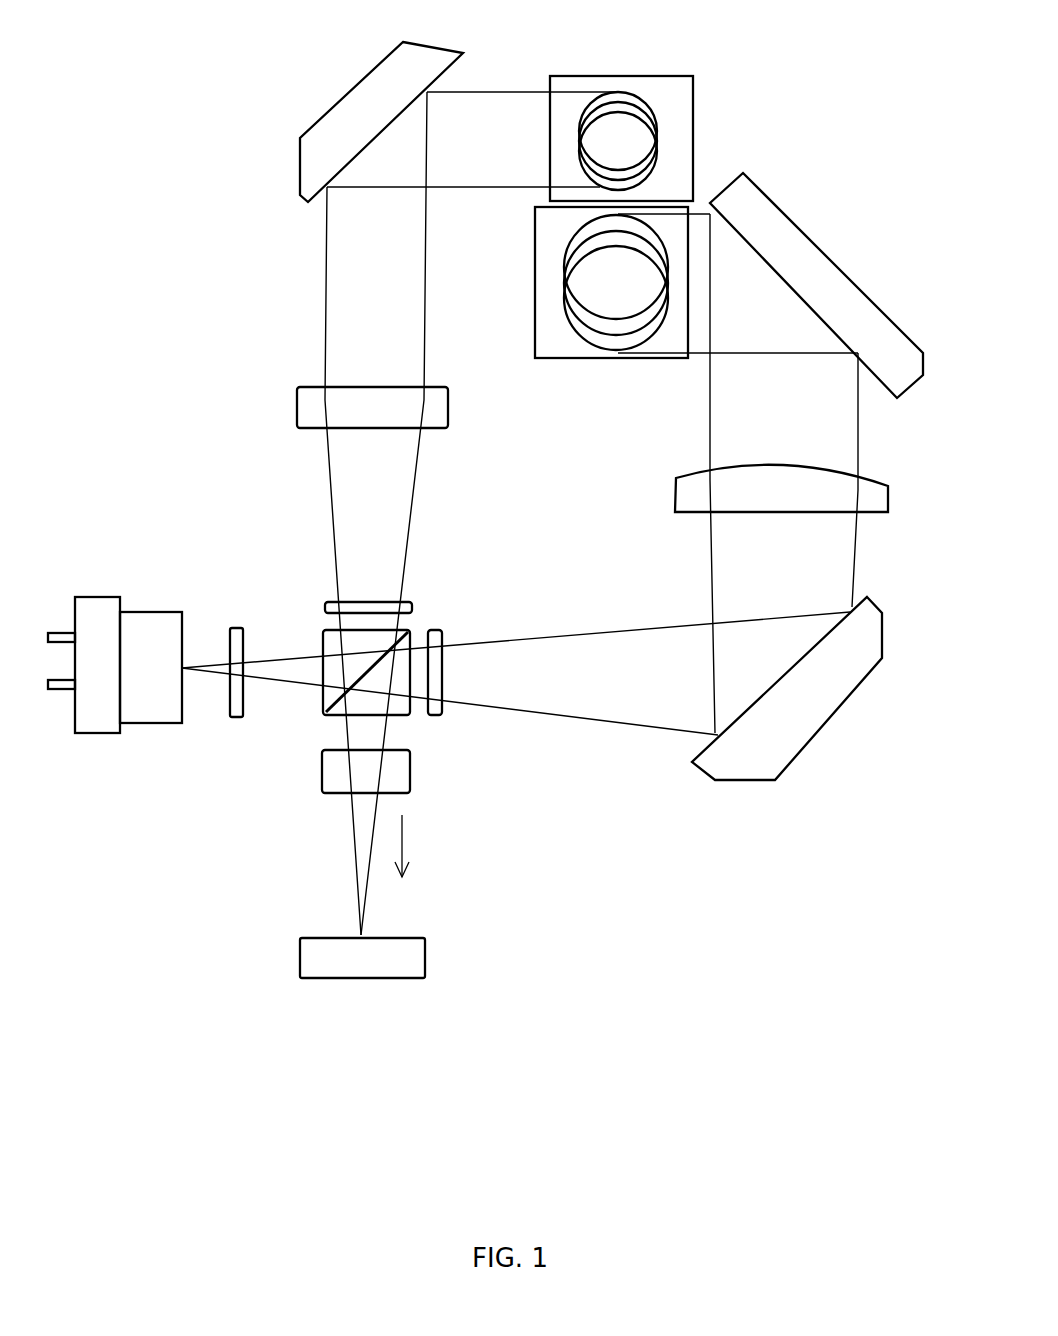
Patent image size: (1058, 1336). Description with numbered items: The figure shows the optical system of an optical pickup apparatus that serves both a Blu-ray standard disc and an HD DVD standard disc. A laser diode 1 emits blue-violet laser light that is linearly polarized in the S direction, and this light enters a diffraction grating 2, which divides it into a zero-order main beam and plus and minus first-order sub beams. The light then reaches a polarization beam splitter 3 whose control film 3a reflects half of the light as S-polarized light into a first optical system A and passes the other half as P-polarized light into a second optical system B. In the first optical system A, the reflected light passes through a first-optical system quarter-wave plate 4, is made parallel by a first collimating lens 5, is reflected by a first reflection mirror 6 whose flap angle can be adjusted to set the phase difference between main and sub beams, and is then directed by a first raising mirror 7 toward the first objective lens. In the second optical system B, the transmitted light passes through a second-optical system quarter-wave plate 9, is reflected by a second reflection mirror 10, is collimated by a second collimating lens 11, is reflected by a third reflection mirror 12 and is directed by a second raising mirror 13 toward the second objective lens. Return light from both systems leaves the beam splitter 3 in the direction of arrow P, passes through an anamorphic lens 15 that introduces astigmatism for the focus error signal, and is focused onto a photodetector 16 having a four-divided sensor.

The laser diode 1 is at (147, 715).
The diffraction grating 2 is at (233, 712).
The polarization beam splitter 3 is at (328, 640).
The control film 3a is at (328, 702).
The first-optical system quarter-wave plate 4 is at (407, 603).
The first collimating lens 5 is at (305, 407).
The first reflection mirror 6 is at (343, 118).
The first raising mirror 7 is at (675, 93).
The second-optical system quarter-wave plate 9 is at (435, 717).
The second reflection mirror 10 is at (813, 703).
The second collimating lens 11 is at (877, 495).
The third reflection mirror 12 is at (862, 307).
The second raising mirror 13 is at (553, 340).
The anamorphic lens 15 is at (317, 793).
The photodetector 16 is at (420, 947).
The first optical system A is at (275, 317).
The second optical system B is at (593, 747).
The arrow P is at (402, 864).